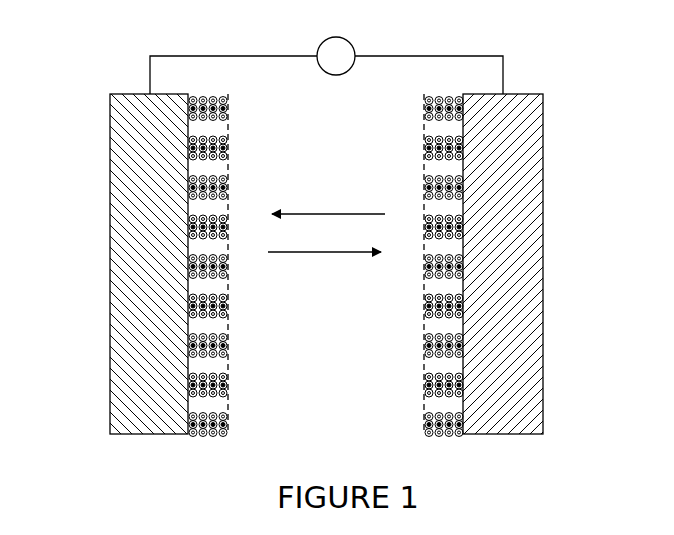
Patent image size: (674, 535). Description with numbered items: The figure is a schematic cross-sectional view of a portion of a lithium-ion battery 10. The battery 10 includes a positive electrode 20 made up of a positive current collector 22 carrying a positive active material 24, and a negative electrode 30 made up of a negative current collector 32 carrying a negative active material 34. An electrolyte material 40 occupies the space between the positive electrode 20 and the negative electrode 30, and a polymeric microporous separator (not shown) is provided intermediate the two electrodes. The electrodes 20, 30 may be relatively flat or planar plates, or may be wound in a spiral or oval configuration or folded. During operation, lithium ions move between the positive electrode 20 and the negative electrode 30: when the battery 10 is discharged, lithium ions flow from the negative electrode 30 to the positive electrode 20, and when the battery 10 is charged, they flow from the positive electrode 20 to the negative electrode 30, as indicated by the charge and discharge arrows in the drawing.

The lithium-ion battery 10 is at (474, 50).
The positive electrode 20 is at (398, 287).
The positive current collector 22 is at (522, 134).
The positive active material 24 is at (442, 108).
The negative electrode 30 is at (264, 286).
The negative current collector 32 is at (140, 131).
The negative active material 34 is at (213, 110).
The electrolyte material 40 is at (326, 263).